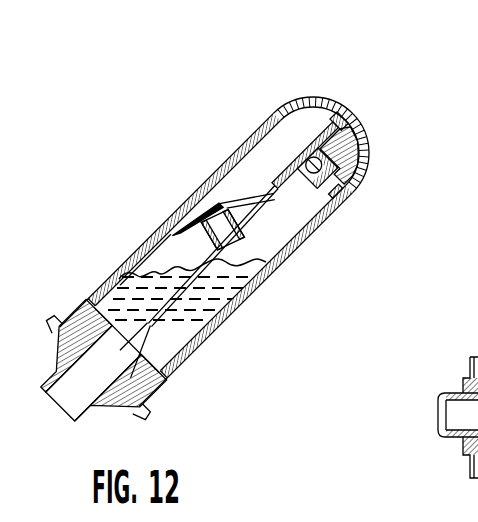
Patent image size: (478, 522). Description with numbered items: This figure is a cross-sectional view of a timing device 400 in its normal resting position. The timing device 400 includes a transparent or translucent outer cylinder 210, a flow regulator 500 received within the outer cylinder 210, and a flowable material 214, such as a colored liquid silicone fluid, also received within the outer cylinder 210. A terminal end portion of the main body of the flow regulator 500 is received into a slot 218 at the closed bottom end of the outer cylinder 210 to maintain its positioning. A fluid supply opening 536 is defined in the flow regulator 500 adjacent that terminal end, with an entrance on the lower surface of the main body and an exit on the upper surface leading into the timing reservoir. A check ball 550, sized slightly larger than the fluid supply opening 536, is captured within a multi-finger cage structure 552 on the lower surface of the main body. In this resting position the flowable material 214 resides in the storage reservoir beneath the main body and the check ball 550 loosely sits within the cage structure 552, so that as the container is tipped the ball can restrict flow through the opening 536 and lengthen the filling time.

The timing device 400 is at (229, 234).
The outer cylinder 210 is at (267, 286).
The flowable material 214 is at (192, 310).
The slot 218 is at (357, 153).
The flow regulator 500 is at (128, 279).
The fluid supply opening 536 is at (308, 158).
The check ball 550 is at (338, 193).
The cage structure 552 is at (342, 178).